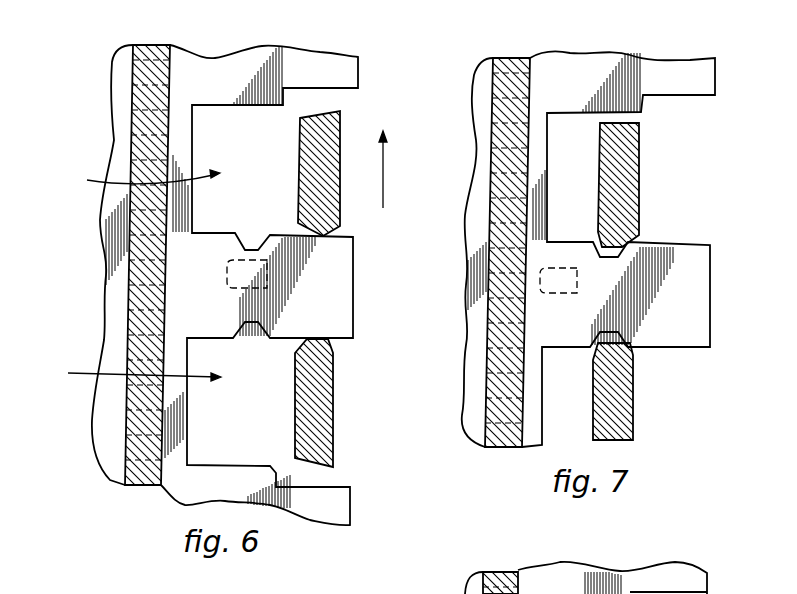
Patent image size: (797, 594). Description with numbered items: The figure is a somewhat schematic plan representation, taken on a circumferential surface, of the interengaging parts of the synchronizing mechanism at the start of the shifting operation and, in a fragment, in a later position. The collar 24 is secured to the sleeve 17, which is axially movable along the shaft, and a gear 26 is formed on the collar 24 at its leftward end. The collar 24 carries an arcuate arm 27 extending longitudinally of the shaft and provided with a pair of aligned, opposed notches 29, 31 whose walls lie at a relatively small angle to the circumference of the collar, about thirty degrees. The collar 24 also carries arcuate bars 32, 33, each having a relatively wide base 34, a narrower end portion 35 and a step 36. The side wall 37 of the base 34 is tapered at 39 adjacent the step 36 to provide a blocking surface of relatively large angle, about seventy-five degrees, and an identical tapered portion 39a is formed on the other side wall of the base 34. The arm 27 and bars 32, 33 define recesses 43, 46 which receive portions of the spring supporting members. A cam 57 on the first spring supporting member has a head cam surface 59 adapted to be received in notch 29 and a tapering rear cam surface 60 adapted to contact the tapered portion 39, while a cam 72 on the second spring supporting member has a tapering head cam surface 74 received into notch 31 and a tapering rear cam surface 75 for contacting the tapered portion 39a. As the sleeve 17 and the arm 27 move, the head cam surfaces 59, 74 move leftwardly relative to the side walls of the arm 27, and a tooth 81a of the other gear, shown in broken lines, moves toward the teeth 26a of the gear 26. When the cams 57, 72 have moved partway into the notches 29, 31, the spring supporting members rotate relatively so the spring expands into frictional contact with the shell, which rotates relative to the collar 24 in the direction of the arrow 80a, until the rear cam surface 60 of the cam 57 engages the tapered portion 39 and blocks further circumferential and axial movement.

In FIG. 6, the sleeve 17 is at (103, 300).
In FIG. 6, the collar 24 is at (128, 323).
In FIG. 7, the collar 24 is at (490, 122).
In FIG. 6, the gear 26 is at (145, 484).
In FIG. 7, the gear 26 is at (512, 54).
In FIG. 6, the teeth of gear 26 26a is at (130, 445).
In FIG. 7, the teeth of gear 26 26a is at (508, 105).
In FIG. 6, the arcuate arm 27 is at (345, 265).
In FIG. 7, the arcuate arm 27 is at (695, 292).
In FIG. 6, the notch 29 is at (252, 243).
In FIG. 6, the notch 31 is at (255, 325).
In FIG. 6, the arcuate bar 32 is at (360, 504).
In FIG. 6, the arcuate bar 33 is at (364, 76).
In FIG. 7, the arcuate bar 33 is at (690, 582).
In FIG. 6, the base 34 is at (190, 72).
In FIG. 6, the end portion 35 is at (342, 67).
In FIG. 6, the step 36 is at (271, 50).
In FIG. 6, the side wall 37 is at (226, 106).
In FIG. 6, the tapered portion 39 is at (280, 104).
In FIG. 6, the tapered portion 39a is at (270, 470).
In FIG. 6, the recess 43 is at (131, 375).
In FIG. 6, the recess 46 is at (139, 179).
In FIG. 6, the cam 57 is at (326, 154).
In FIG. 7, the cam 57 is at (620, 156).
In FIG. 6, the head cam surface 59 is at (322, 228).
In FIG. 6, the rear cam surface 60 is at (338, 114).
In FIG. 6, the cam 72 is at (325, 415).
In FIG. 7, the cam 72 is at (612, 392).
In FIG. 6, the head cam surface 74 is at (325, 352).
In FIG. 6, the rear cam surface 75 is at (325, 470).
In FIG. 6, the arrow 80a is at (384, 180).
In FIG. 6, the teeth of gear 81 81a is at (262, 258).
In FIG. 7, the teeth of gear 81 81a is at (562, 285).